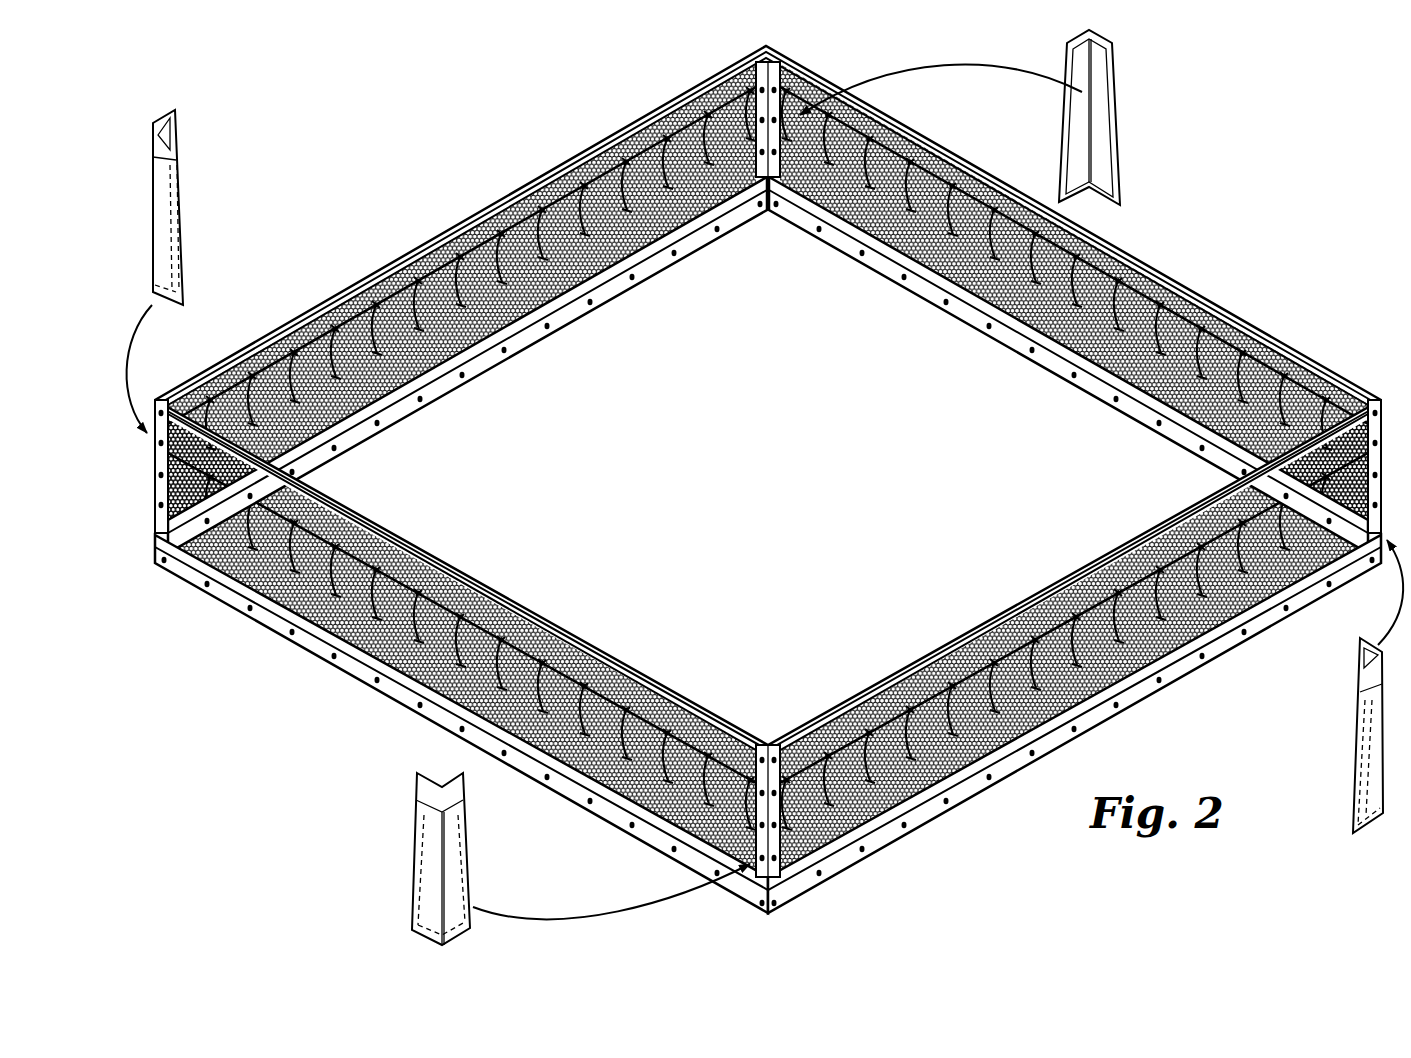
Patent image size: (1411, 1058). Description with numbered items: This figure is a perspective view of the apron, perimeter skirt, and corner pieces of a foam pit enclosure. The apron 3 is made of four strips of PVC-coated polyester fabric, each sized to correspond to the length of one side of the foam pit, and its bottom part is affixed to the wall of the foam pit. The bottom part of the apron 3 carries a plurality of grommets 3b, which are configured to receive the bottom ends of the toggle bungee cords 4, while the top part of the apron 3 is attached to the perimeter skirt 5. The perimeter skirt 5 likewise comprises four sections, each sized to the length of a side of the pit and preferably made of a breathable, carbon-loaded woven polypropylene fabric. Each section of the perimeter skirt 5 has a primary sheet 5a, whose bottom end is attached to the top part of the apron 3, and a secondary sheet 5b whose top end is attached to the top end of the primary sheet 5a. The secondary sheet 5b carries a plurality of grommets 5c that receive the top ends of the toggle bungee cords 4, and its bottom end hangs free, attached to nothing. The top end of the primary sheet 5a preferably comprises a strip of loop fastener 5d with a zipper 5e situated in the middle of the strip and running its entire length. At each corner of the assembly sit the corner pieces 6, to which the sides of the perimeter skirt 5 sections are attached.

The apron 3 is at (437, 729).
The grommets 3b is at (677, 254).
The toggle bungee cords 4 is at (555, 198).
The perimeter skirt 5 is at (345, 286).
The primary sheet 5a is at (527, 288).
The secondary sheet 5b is at (565, 210).
The grommets 5c is at (547, 208).
The strip of loop fastener 5d is at (450, 234).
The zipper 5e is at (487, 216).
The corner pieces 6 is at (186, 196).